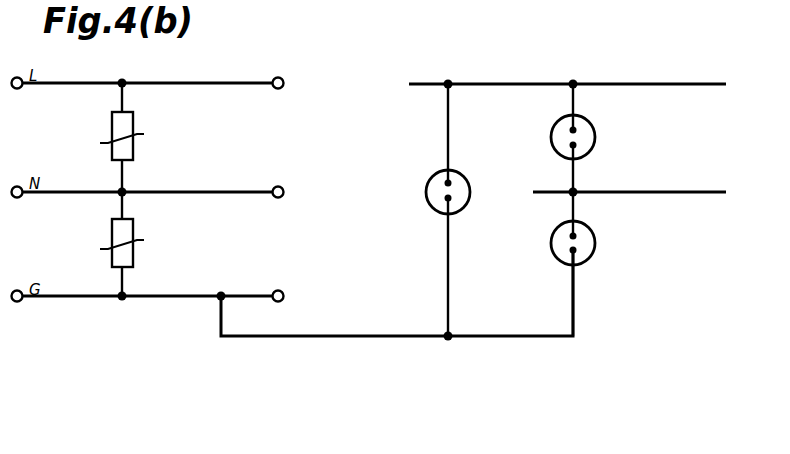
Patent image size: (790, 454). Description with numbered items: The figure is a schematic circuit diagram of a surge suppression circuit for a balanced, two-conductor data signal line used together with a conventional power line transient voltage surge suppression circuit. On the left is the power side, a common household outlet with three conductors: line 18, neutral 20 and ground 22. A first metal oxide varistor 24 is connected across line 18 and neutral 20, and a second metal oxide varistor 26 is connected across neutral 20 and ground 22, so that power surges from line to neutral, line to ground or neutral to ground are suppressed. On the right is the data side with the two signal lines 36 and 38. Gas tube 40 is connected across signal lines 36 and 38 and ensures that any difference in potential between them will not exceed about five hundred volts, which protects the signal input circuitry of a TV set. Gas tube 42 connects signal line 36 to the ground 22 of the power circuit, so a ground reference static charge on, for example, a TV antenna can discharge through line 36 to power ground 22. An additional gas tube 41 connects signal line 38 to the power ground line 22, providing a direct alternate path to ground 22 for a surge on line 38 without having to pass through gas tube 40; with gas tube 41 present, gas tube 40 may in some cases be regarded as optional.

The line 18 is at (224, 82).
The neutral 20 is at (213, 190).
The ground 22 is at (169, 293).
The first metal oxide varistor 24 is at (112, 115).
The second metal oxide varistor 26 is at (112, 220).
The signal line 36 is at (624, 82).
The signal line 38 is at (649, 190).
The gas tube 40 is at (551, 128).
The gas tube 41 is at (552, 256).
The gas tube 42 is at (426, 181).